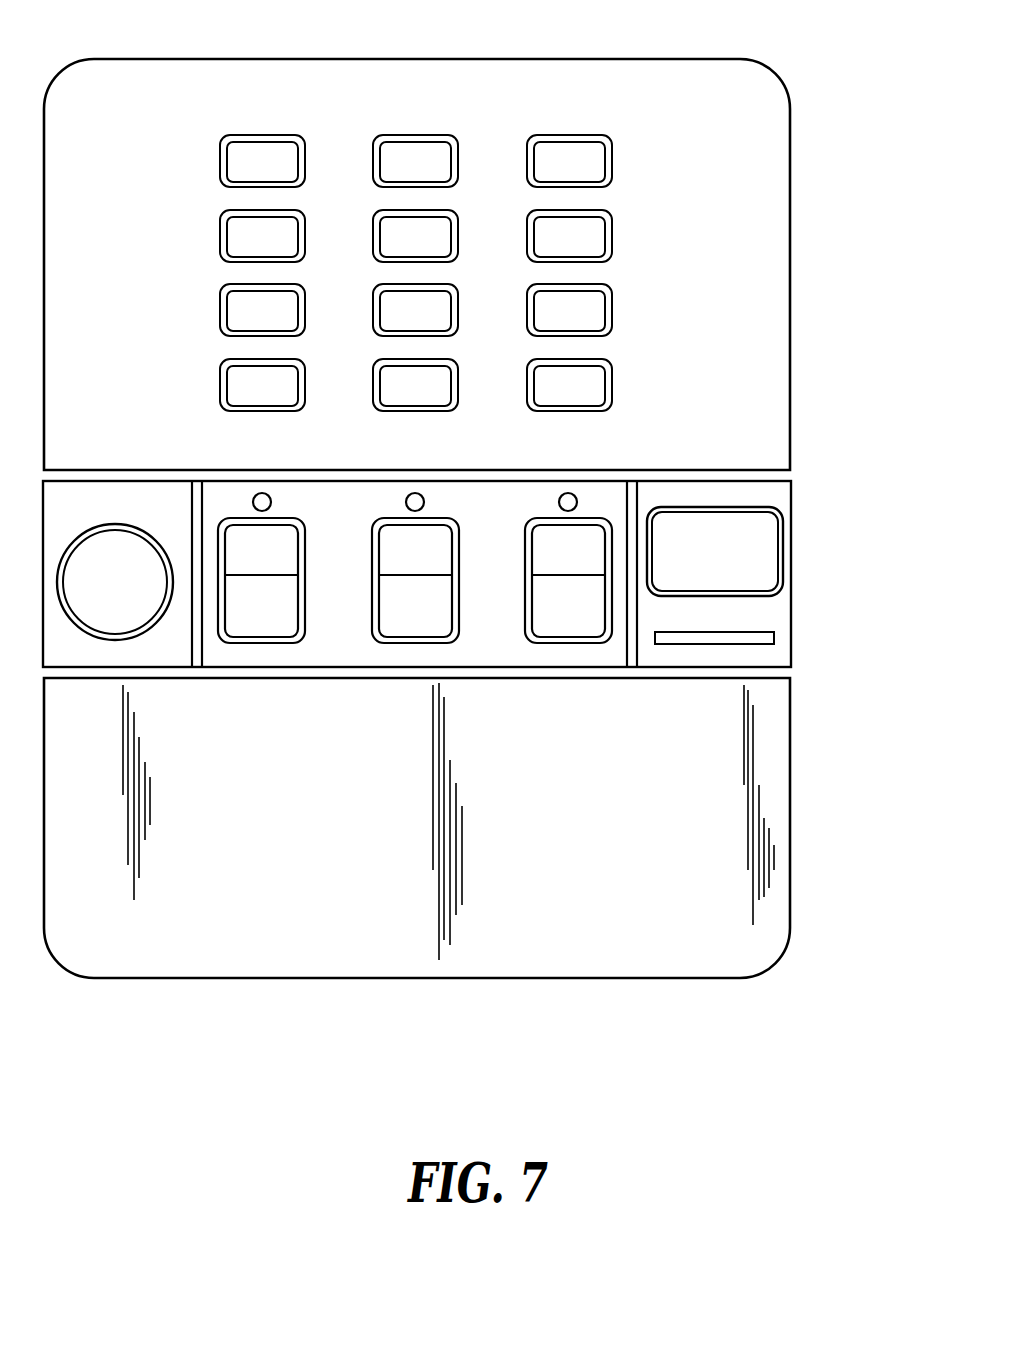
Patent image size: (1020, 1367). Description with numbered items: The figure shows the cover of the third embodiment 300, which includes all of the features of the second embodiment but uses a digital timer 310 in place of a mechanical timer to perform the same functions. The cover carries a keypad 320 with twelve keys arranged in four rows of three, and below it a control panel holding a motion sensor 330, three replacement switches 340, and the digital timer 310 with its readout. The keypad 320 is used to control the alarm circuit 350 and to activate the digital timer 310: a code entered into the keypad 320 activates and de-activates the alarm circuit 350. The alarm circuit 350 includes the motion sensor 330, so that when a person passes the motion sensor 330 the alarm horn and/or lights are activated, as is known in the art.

The third embodiment 300 is at (722, 56).
The digital timer 310 is at (791, 541).
The keypad 320 is at (622, 263).
The motion sensor 330 is at (115, 582).
The replacement switches 340 is at (415, 568).
The alarm circuit 350 is at (733, 505).